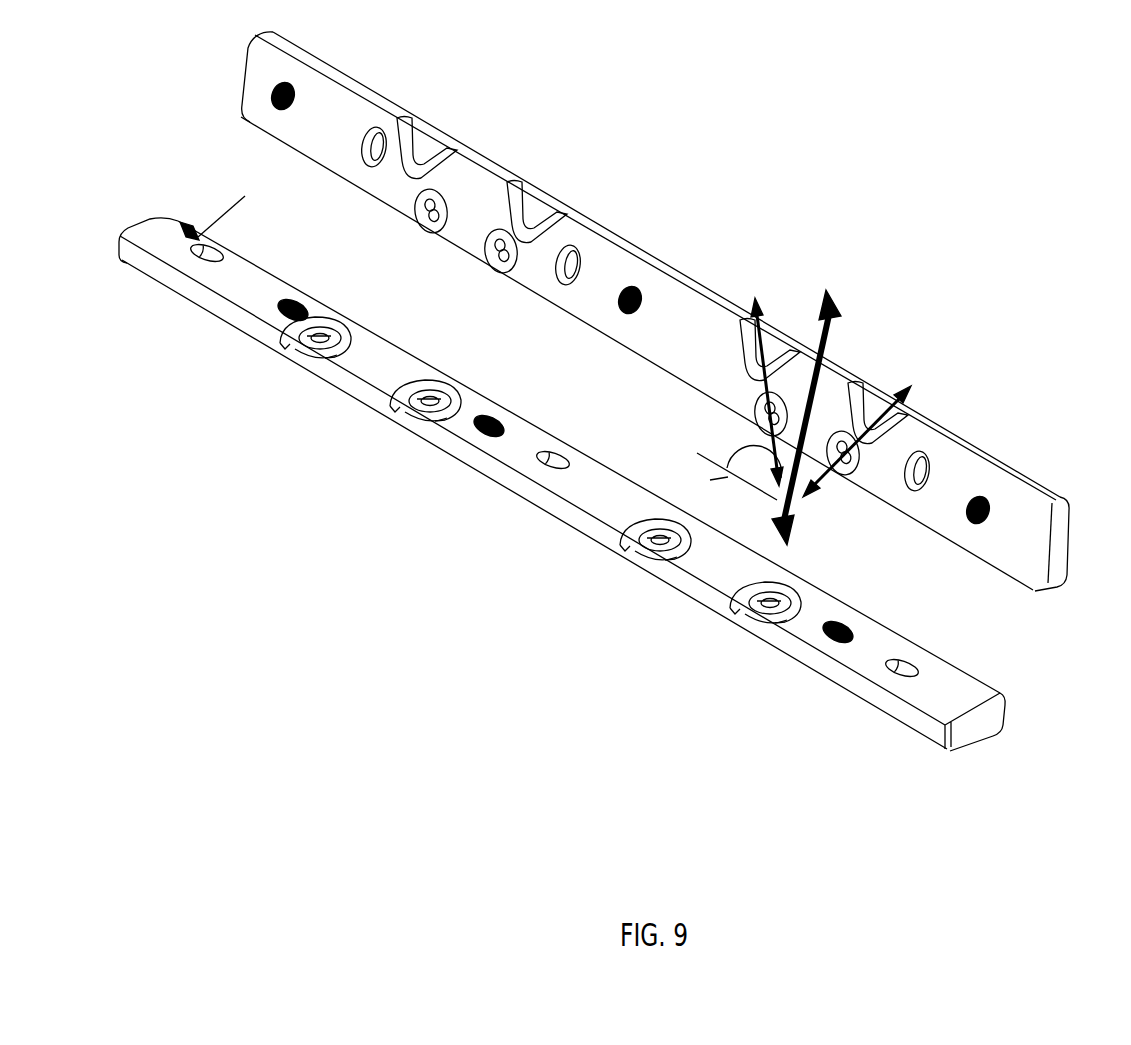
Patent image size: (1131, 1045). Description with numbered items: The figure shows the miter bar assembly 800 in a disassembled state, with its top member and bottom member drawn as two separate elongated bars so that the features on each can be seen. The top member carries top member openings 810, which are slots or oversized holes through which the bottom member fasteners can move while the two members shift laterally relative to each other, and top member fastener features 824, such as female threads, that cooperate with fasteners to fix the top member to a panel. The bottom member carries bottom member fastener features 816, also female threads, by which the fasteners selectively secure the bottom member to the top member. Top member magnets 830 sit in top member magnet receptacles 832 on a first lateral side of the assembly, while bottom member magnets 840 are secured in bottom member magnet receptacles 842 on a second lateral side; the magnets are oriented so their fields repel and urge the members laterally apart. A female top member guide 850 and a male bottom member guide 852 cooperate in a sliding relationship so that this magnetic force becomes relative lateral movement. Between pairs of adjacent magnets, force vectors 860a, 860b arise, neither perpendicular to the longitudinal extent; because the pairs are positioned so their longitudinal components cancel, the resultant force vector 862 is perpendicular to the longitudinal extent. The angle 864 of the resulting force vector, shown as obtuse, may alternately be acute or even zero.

The miter bar assembly 800 is at (619, 391).
The top member openings 810 is at (373, 133).
The bottom member fastener features 816 is at (283, 310).
The top member fastener features 824 is at (292, 92).
The top member magnets 830 is at (497, 258).
The top member magnet receptacles 832 is at (323, 333).
The bottom member magnets 840 is at (515, 501).
The bottom member magnet receptacles 842 is at (303, 340).
The top member guide 850 is at (427, 147).
The bottom member guide 852 is at (330, 347).
The force vector 860a is at (765, 360).
The force vector 860b is at (855, 433).
The resultant force vector 862 is at (823, 337).
The angle 864 is at (737, 444).